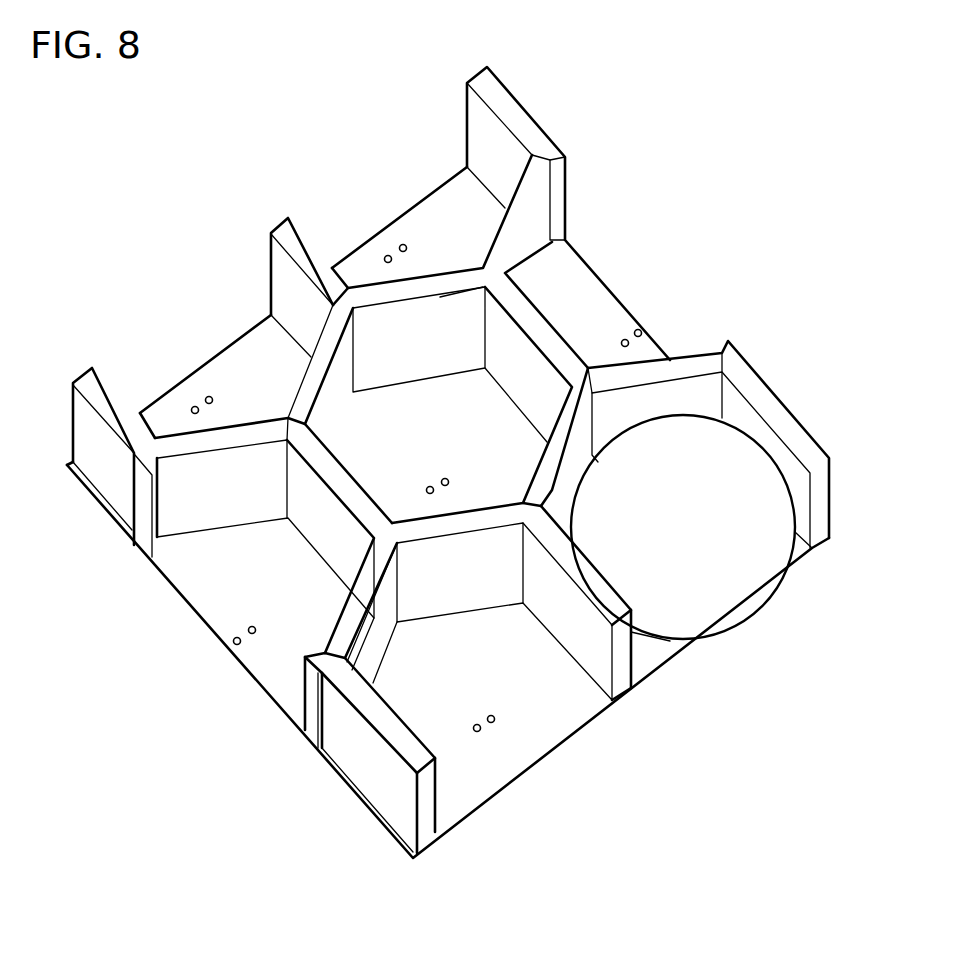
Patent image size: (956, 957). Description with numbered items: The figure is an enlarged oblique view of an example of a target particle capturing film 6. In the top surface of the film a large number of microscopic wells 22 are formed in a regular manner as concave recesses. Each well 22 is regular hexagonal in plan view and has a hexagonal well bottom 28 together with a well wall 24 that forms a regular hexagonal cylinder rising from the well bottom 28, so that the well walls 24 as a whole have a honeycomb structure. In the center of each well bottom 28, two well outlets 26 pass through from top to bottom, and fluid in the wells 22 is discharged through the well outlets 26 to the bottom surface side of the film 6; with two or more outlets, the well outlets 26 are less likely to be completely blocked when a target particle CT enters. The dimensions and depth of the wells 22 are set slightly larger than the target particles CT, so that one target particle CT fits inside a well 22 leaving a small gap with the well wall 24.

The target particle capturing film 6 is at (572, 122).
The well 22 is at (487, 402).
The well wall 24 is at (613, 408).
The well outlet 26 is at (427, 488).
The well bottom 28 is at (572, 710).
The target particle CT is at (742, 430).